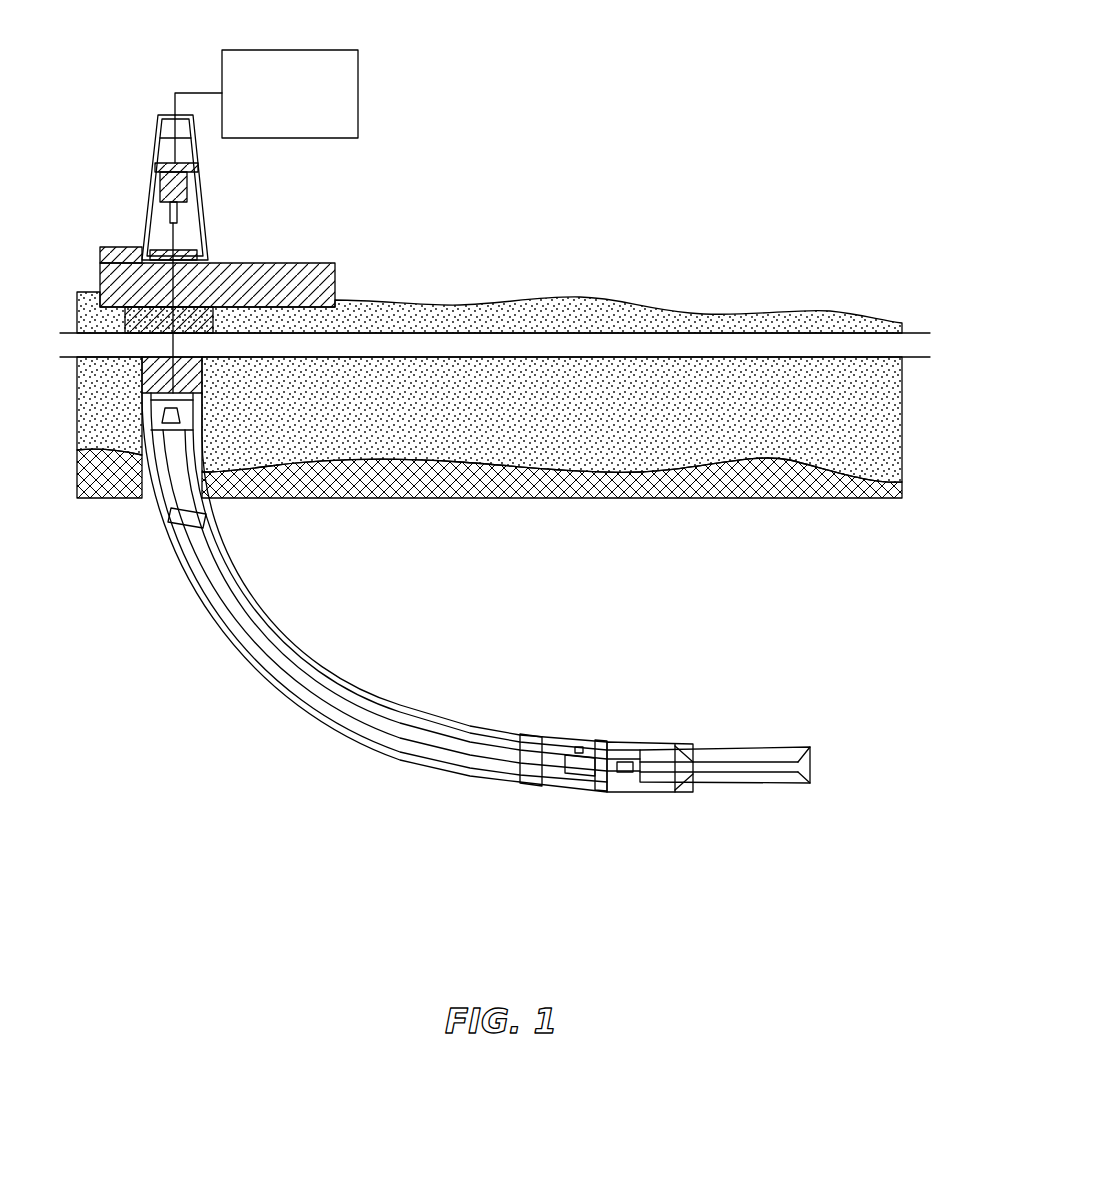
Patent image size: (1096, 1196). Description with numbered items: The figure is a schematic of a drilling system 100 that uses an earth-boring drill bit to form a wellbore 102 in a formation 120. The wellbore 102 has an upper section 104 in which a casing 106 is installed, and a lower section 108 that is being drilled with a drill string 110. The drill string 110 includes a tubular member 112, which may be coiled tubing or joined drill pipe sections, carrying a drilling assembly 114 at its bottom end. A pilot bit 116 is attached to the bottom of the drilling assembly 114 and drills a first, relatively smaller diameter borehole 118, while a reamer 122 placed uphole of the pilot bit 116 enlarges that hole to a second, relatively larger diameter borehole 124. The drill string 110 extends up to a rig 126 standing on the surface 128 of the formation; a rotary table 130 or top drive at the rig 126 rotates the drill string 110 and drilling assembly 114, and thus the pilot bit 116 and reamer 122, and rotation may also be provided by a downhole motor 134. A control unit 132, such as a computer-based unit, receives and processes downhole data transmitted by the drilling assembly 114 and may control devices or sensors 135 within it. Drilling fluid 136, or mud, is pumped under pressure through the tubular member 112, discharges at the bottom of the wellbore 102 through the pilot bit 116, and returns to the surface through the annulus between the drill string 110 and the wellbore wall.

The drilling system 100 is at (660, 58).
The wellbore 102 is at (182, 598).
The upper section 104 is at (216, 426).
The casing 106 is at (142, 427).
The lower section 108 is at (237, 652).
The drill string 110 is at (228, 595).
The tubular member 112 is at (216, 548).
The drilling assembly 114 is at (667, 801).
The pilot bit 116 is at (805, 763).
The first diameter borehole 118 is at (768, 752).
The formation 120 is at (578, 612).
The reamer 122 is at (688, 741).
The second diameter borehole 124 is at (277, 628).
The rig 126 is at (142, 195).
The surface 128 is at (75, 333).
The rotary table 130 is at (187, 252).
The control unit 132 is at (318, 50).
The downhole motor 134 is at (568, 775).
The sensors 135 is at (627, 781).
The drilling fluid 136 is at (120, 248).